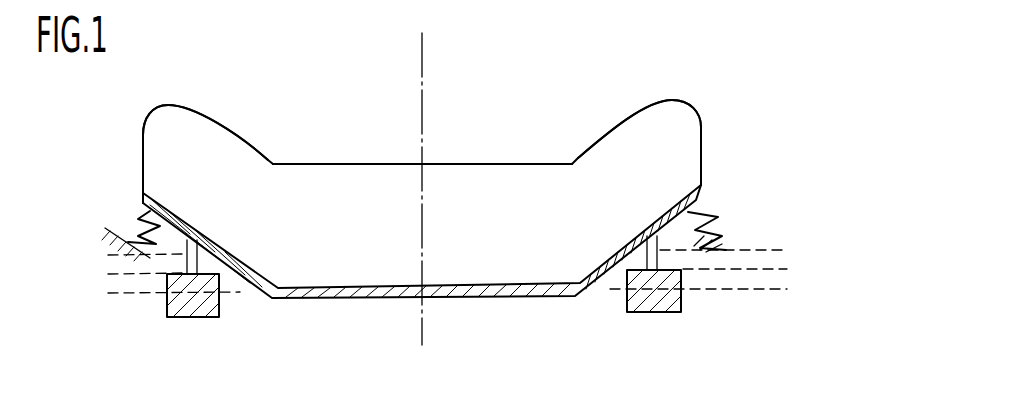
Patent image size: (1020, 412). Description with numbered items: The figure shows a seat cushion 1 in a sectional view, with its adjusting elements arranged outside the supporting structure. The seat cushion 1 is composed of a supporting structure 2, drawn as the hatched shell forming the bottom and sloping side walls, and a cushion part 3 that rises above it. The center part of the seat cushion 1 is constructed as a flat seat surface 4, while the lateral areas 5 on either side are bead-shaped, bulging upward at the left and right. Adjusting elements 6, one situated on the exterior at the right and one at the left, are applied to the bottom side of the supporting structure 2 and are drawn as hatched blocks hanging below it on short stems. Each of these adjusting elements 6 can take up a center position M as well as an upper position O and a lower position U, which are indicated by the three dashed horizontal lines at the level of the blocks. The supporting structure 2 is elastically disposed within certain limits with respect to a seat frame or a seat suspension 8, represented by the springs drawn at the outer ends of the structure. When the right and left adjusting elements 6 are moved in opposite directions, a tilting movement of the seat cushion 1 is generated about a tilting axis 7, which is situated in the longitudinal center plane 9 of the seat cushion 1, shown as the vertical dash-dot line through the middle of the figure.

The seat cushion 1 is at (710, 88).
The supporting structure 2 is at (536, 290).
The cushion part 3 is at (670, 150).
The seat surface 4 is at (508, 163).
The lateral areas 5 is at (212, 153).
The adjusting elements 6 is at (208, 302).
The tilting axis 7 is at (422, 196).
The suspension 8 is at (136, 228).
The longitudinal center plane 9 is at (423, 52).
The upper position O is at (787, 250).
The center position M is at (787, 269).
The lower position U is at (787, 289).